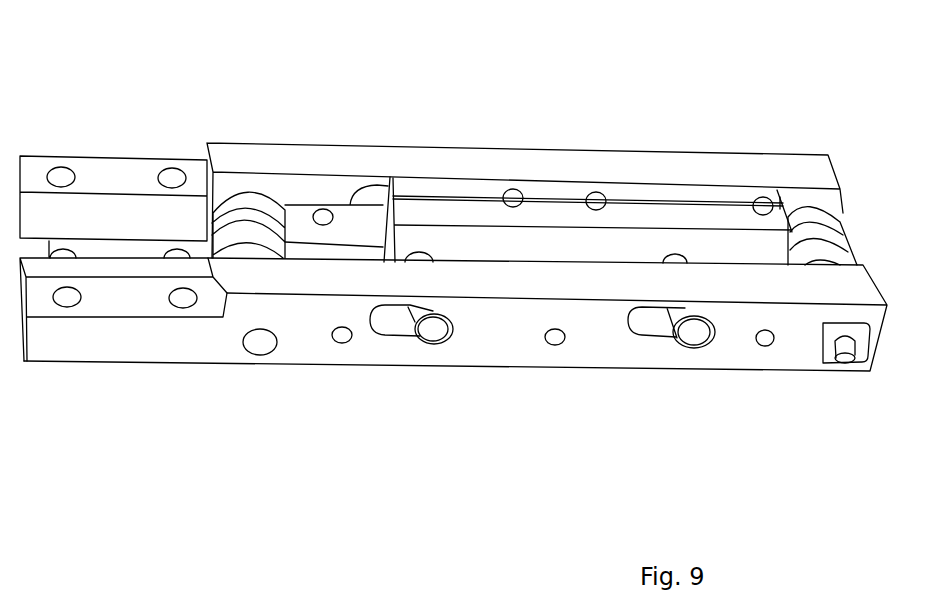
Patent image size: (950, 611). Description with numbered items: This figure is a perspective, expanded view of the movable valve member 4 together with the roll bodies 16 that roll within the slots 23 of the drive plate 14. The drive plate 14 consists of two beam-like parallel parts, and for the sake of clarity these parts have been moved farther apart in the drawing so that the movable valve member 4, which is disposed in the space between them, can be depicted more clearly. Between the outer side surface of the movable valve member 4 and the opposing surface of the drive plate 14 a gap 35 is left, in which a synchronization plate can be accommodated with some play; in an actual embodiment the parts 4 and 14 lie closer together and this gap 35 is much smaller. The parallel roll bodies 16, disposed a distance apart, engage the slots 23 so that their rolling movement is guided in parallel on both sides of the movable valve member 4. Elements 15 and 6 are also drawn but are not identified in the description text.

The drive plate 14 is at (428, 158).
The pulley 15 is at (247, 203).
The gap 35 is at (628, 255).
The movable valve member 4 is at (548, 196).
The guide element 6 is at (432, 259).
The slots 23 is at (389, 322).
The roll bodies 16 is at (435, 333).